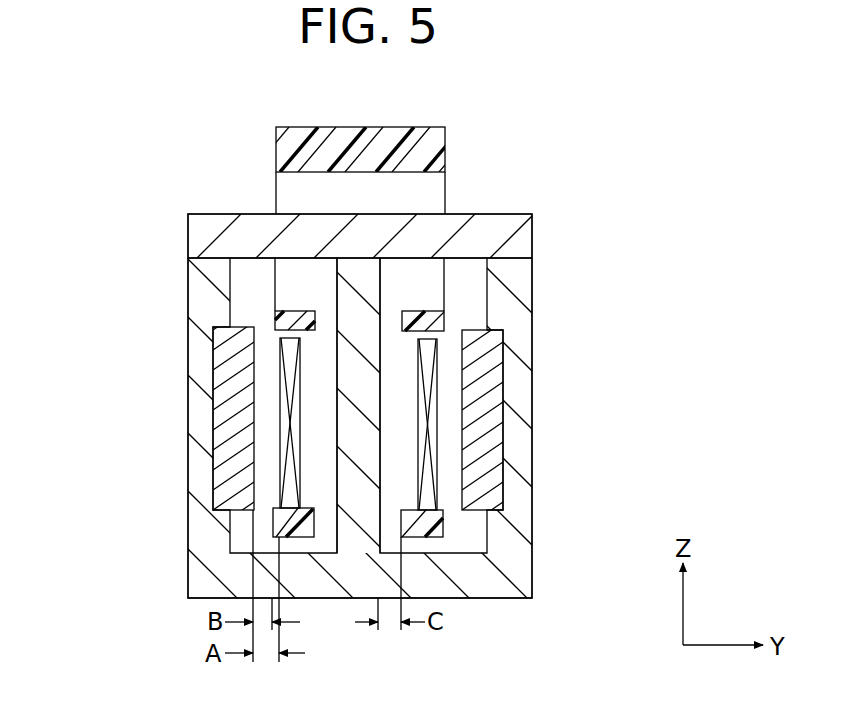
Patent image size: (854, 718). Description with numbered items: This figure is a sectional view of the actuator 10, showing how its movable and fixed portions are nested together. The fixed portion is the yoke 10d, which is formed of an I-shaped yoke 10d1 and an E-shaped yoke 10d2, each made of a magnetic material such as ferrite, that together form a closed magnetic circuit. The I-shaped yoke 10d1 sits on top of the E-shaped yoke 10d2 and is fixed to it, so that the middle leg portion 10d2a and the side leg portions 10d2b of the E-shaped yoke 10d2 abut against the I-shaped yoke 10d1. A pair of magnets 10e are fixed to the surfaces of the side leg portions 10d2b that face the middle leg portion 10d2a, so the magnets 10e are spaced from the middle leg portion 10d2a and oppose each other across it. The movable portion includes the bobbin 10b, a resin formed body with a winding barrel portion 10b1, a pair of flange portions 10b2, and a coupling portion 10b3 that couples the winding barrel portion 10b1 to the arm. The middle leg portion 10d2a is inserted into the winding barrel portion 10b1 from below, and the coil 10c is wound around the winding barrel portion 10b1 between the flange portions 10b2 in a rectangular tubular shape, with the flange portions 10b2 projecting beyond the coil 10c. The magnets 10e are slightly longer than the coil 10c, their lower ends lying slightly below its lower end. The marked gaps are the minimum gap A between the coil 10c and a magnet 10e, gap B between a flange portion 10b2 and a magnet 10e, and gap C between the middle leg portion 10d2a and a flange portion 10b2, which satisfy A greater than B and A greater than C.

The actuator 10 is at (127, 97).
The bobbin 10b is at (450, 123).
The winding barrel portion 10b1 is at (408, 494).
The flange portions 10b2 is at (425, 324).
The coupling portion 10b3 is at (448, 160).
The coil 10c is at (430, 462).
The yoke 10d is at (80, 217).
The I-shaped yoke 10d1 is at (188, 234).
The E-shaped yoke 10d2 is at (188, 277).
The middle leg portion 10d2a is at (350, 476).
The side leg portions 10d2b is at (197, 433).
The magnets 10e is at (483, 402).